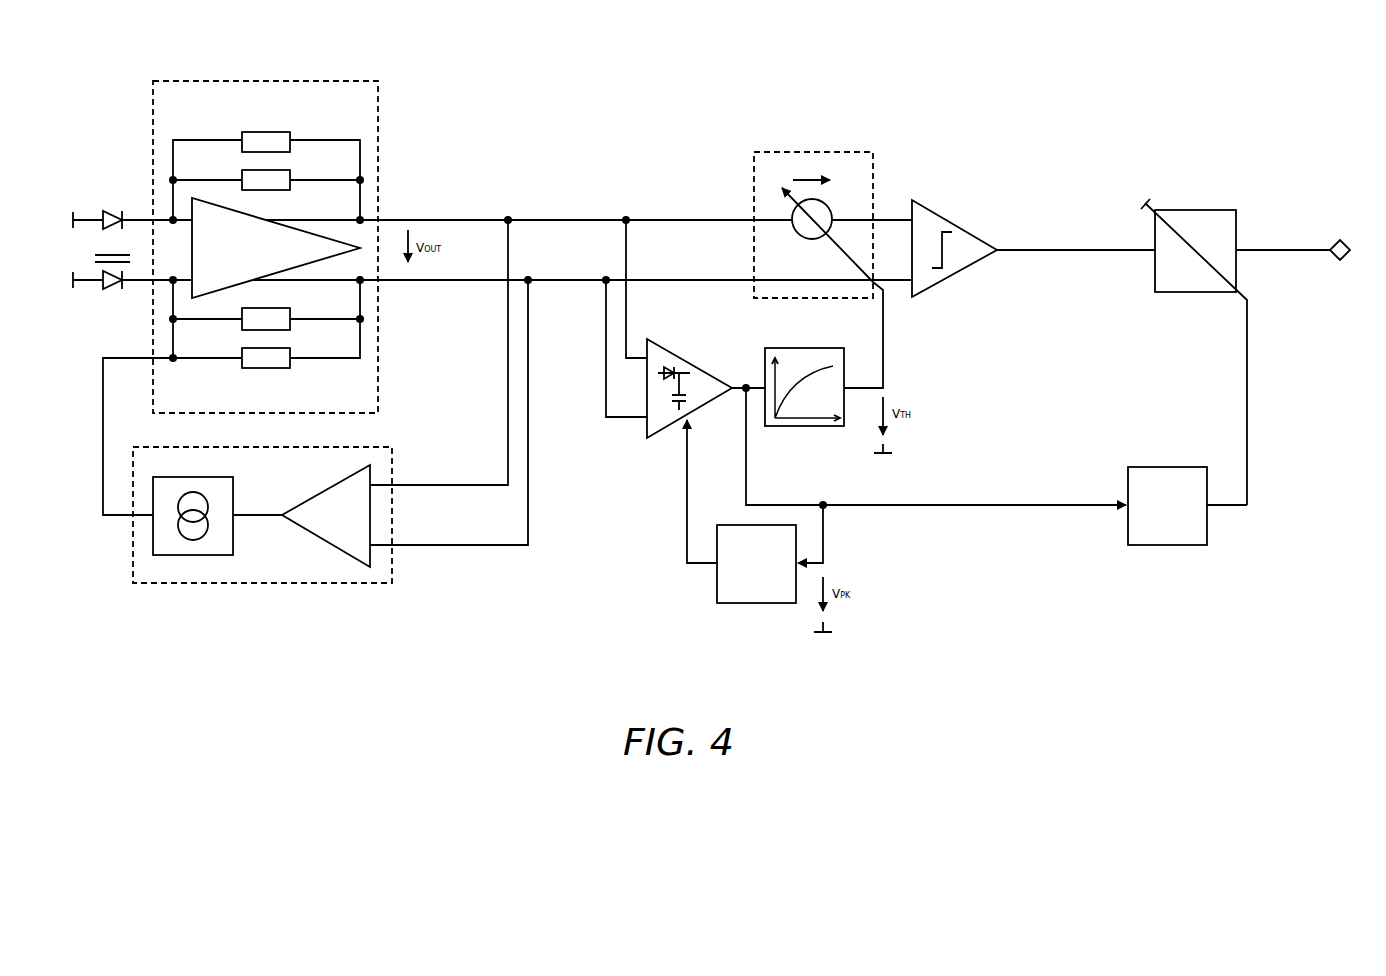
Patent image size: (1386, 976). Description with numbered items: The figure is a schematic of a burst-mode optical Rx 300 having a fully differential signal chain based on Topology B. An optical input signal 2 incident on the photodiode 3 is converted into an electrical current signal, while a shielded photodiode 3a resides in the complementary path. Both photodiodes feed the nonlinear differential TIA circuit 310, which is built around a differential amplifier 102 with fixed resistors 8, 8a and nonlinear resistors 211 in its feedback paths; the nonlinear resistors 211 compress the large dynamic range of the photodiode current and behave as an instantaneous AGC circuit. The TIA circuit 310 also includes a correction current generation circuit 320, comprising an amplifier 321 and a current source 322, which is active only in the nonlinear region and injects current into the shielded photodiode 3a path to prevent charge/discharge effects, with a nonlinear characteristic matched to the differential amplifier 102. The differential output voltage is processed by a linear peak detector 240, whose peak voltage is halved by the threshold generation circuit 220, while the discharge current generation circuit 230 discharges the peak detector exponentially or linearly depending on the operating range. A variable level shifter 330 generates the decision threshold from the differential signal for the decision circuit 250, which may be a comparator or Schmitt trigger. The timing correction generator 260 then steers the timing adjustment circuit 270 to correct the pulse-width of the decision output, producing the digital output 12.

The optical input signal 2 is at (110, 205).
The photodiode 3 is at (119, 214).
The shielded photodiode 3a is at (118, 288).
The fixed resistor 8 is at (276, 182).
The fixed resistor 8a is at (268, 316).
The digital output 12 is at (1338, 262).
The differential amplifier 102 is at (345, 250).
The nonlinear resistor 211 is at (270, 143).
The threshold generation circuit 220 is at (845, 427).
The discharge current generation circuit 230 is at (717, 590).
The linear peak detector 240 is at (707, 371).
The decision circuit 250 is at (965, 230).
The timing correction generator 260 is at (1150, 467).
The timing adjustment circuit 270 is at (1236, 210).
The burst-mode optical Rx 300 is at (958, 62).
The nonlinear differential TIA circuit 310 is at (327, 81).
The correction current generation circuit 320 is at (370, 447).
The amplifier 321 is at (318, 503).
The current source 322 is at (205, 477).
The variable level shifter 330 is at (873, 152).